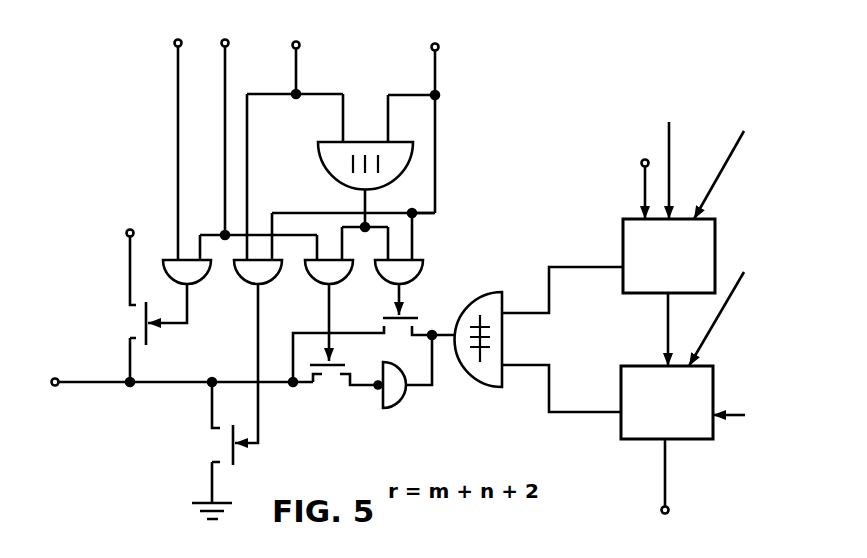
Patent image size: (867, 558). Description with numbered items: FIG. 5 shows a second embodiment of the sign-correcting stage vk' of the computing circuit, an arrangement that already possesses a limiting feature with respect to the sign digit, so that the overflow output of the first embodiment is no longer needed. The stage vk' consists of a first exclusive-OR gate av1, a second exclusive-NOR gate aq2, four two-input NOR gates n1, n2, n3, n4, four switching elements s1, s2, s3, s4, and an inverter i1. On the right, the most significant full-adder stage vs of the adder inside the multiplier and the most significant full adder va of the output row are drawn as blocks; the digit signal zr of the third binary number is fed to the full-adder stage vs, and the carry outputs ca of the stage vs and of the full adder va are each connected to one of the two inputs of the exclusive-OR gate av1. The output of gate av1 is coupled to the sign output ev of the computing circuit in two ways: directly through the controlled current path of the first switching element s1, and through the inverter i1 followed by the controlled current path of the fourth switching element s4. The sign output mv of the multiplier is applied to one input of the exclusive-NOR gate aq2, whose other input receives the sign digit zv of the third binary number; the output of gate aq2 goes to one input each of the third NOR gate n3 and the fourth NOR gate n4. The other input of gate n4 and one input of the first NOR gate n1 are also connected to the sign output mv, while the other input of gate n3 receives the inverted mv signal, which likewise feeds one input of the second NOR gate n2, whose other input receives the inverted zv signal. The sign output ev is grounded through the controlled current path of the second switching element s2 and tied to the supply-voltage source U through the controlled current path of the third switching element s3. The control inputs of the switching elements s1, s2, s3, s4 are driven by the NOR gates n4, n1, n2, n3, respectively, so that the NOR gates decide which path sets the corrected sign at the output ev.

The sign digit of the third binary number zv is at (295, 140).
The sign output of the multiplier mv is at (421, 117).
The second exclusive-NOR gate aq2 is at (326, 176).
The first NOR gate n1 is at (261, 351).
The second NOR gate n2 is at (183, 291).
The third NOR gate n3 is at (333, 310).
The fourth NOR gate n4 is at (403, 287).
The supply-voltage source U is at (131, 255).
The third switching element s3 is at (124, 344).
The sign output of the computing circuit ev is at (177, 394).
The second switching element s2 is at (209, 450).
The fourth switching element s4 is at (346, 386).
The first switching element s1 is at (374, 346).
The inverter i1 is at (407, 385).
The first exclusive-OR gate av1 is at (487, 291).
The sign-correcting stage vk is at (521, 164).
The full-adder stage vs is at (683, 244).
The carry output ca is at (640, 342).
The most significant digit signal of the third binary number zr is at (643, 178).
The full adder of the output row va is at (683, 355).
The output terminal er is at (665, 489).